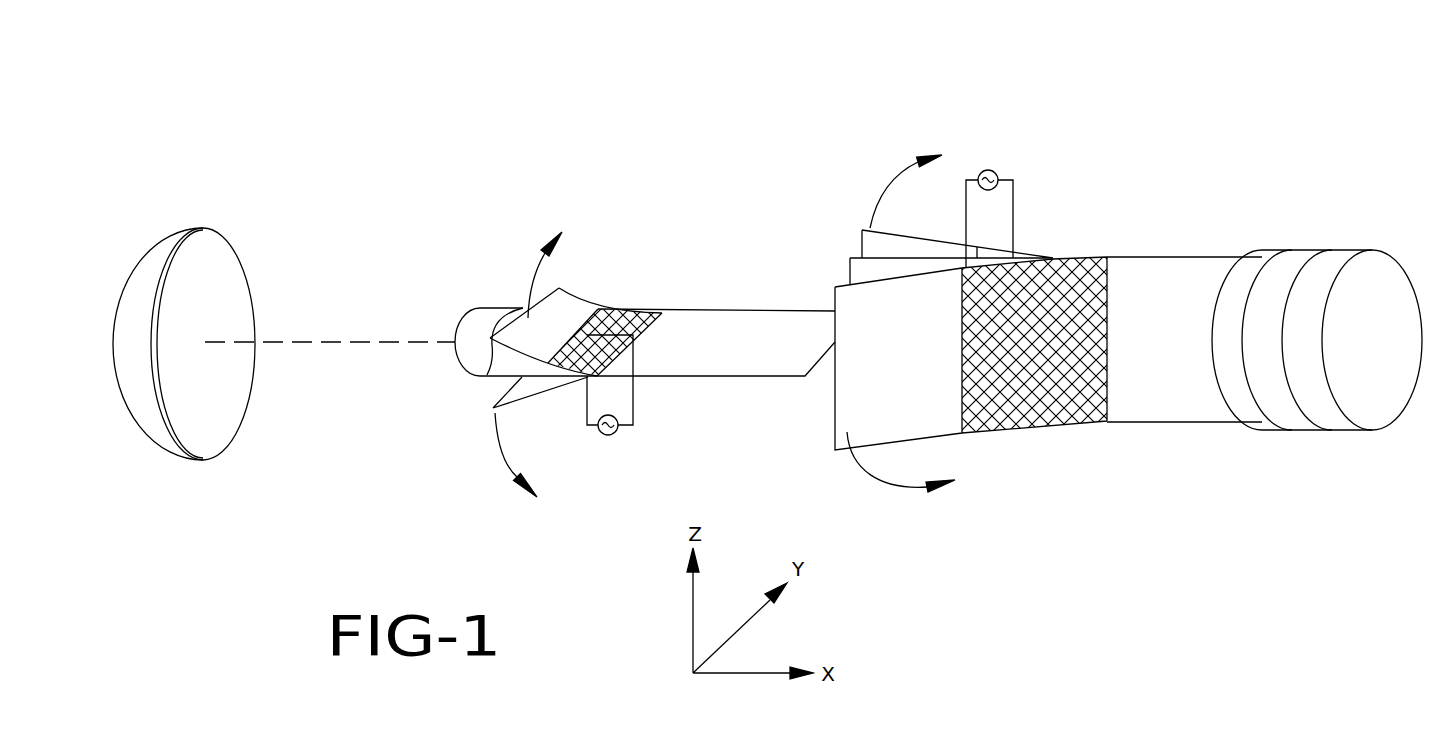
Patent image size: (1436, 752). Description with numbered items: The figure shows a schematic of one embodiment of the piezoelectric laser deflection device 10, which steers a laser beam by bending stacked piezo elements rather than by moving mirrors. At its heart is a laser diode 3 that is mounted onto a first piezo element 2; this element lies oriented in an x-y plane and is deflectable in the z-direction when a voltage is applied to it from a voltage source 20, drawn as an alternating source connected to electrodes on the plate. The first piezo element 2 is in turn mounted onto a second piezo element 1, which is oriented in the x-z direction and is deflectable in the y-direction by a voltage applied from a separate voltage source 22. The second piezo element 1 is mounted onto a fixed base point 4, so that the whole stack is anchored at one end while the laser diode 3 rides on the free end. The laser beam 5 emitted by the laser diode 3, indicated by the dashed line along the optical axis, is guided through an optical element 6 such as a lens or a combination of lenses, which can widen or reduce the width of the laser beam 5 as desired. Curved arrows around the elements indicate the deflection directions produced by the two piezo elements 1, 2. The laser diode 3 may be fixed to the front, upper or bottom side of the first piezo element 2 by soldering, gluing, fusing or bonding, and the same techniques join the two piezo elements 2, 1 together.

The piezoelectric laser deflection device 10 is at (767, 118).
The second piezo element 1 is at (1092, 268).
The first piezo element 2 is at (633, 333).
The laser diode 3 is at (472, 320).
The base point 4 is at (1327, 262).
The laser beam 5 is at (353, 325).
The optical element 6 is at (143, 290).
The voltage source 20 is at (610, 410).
The voltage source 22 is at (998, 170).